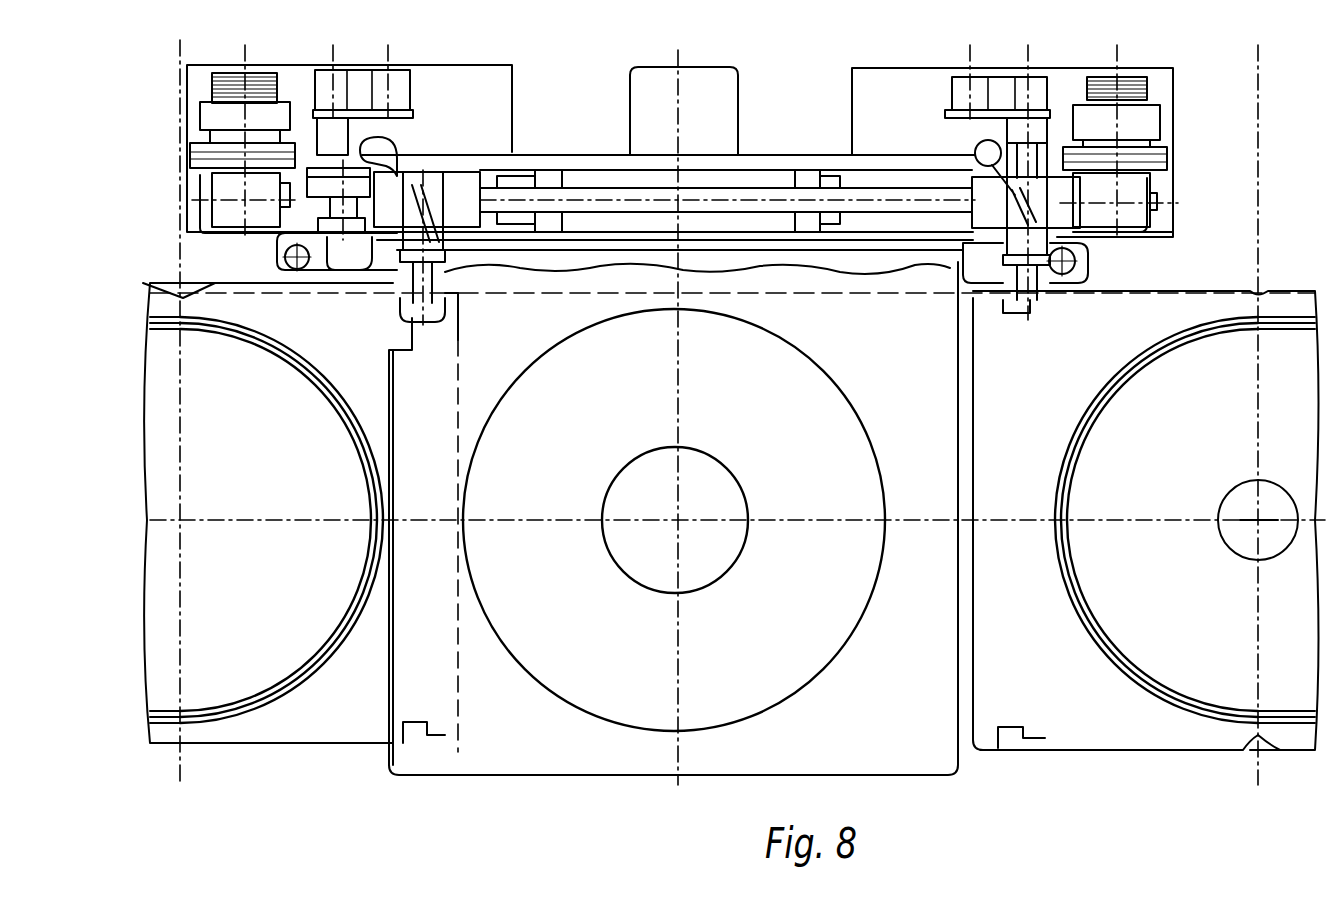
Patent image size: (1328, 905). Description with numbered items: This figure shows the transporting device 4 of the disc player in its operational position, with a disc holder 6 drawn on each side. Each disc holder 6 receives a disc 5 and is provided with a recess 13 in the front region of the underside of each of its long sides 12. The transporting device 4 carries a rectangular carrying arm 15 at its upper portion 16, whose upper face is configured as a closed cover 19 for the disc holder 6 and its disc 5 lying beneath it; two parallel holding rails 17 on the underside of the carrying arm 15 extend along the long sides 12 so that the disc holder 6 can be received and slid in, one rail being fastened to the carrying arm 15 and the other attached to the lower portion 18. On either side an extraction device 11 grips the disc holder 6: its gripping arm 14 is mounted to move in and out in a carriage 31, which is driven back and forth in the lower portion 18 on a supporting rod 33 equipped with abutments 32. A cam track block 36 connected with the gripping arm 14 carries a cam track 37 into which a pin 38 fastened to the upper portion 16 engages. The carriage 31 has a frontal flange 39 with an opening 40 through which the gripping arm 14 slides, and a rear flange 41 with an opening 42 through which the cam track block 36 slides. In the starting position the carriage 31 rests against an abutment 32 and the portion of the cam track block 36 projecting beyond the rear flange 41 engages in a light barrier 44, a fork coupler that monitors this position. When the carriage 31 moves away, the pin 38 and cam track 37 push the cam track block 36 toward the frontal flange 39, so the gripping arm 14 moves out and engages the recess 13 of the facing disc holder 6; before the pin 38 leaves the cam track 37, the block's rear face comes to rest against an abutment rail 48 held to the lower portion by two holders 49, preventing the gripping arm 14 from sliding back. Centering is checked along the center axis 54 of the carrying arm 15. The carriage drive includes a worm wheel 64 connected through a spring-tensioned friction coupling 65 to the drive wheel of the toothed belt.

The transporting device 4 is at (762, 128).
The disc 5 is at (242, 585).
The disc holder 6 is at (320, 715).
The extraction device 11 is at (468, 265).
The long sides 12 is at (218, 283).
The recess 13 is at (410, 320).
The gripping arm 14 is at (430, 320).
The carrying arm 15 is at (645, 775).
The upper portion 16 is at (645, 78).
The holding rails 17 is at (878, 297).
The lower portion 18 is at (1176, 200).
The cover 19 is at (908, 661).
The carriage 31 is at (463, 212).
The abutments 32 is at (205, 190).
The supporting rod 33 is at (615, 195).
The cam track block 36 is at (397, 243).
The cam track 37 is at (418, 200).
The pin 38 is at (1003, 290).
The frontal flange 39 is at (420, 250).
The opening 40 is at (427, 307).
The rear flange 41 is at (462, 185).
The opening 42 is at (398, 176).
The light barrier 44 is at (335, 128).
The abutment rail 48 is at (797, 165).
The holders 49 is at (550, 140).
The center axis 54 is at (683, 375).
The worm wheel 64 is at (230, 112).
The friction coupling 65 is at (205, 155).